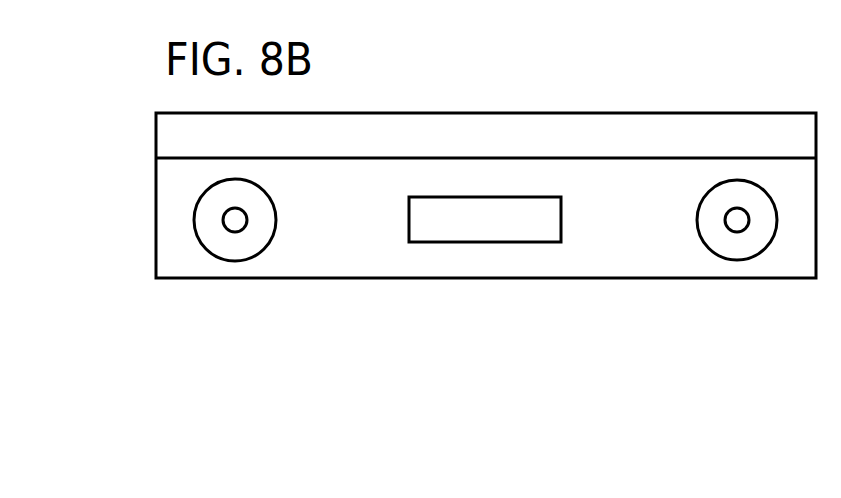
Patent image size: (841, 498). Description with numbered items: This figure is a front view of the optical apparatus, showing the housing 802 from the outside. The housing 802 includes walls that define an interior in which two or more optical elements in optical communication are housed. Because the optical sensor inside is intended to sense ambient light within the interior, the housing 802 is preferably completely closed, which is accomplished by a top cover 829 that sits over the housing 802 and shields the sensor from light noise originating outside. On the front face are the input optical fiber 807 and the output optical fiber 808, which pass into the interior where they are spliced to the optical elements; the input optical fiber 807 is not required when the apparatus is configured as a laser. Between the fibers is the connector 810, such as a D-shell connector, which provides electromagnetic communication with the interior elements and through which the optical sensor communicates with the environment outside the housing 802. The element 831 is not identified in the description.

The top cover 829 is at (157, 140).
The housing 802 is at (192, 237).
The input optical fiber 807 is at (235, 220).
The display window 831 is at (378, 240).
The connector 810 is at (561, 230).
The output optical fiber 808 is at (737, 220).